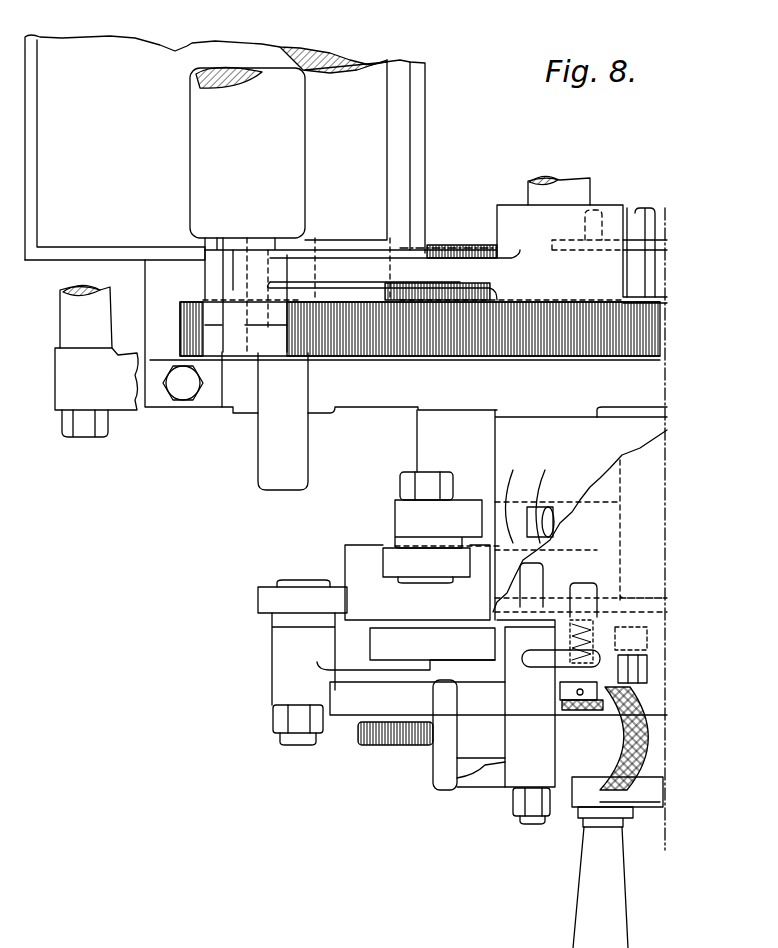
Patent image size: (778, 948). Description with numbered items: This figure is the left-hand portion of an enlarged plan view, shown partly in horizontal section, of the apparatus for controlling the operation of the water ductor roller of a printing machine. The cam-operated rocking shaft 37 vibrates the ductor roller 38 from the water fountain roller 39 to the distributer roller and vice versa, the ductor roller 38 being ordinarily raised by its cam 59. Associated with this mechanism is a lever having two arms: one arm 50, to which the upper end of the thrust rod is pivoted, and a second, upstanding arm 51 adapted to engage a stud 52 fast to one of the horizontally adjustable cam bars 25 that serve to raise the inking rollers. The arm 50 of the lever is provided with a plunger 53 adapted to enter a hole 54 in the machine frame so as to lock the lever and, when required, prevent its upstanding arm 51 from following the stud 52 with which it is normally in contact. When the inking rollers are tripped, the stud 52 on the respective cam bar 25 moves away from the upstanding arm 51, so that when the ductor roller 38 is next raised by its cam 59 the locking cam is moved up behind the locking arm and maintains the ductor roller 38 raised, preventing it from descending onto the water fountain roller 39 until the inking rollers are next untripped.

The cam bar 25 is at (498, 698).
The rocking shaft 37 is at (527, 190).
The ductor roller 38 is at (247, 152).
The water fountain roller 39 is at (346, 114).
The lever arm 50 is at (645, 664).
The upstanding lever arm 51 is at (488, 778).
The stud 52 is at (445, 778).
The plunger 53 is at (560, 665).
The hole 54 is at (585, 578).
The cam 59 is at (417, 582).